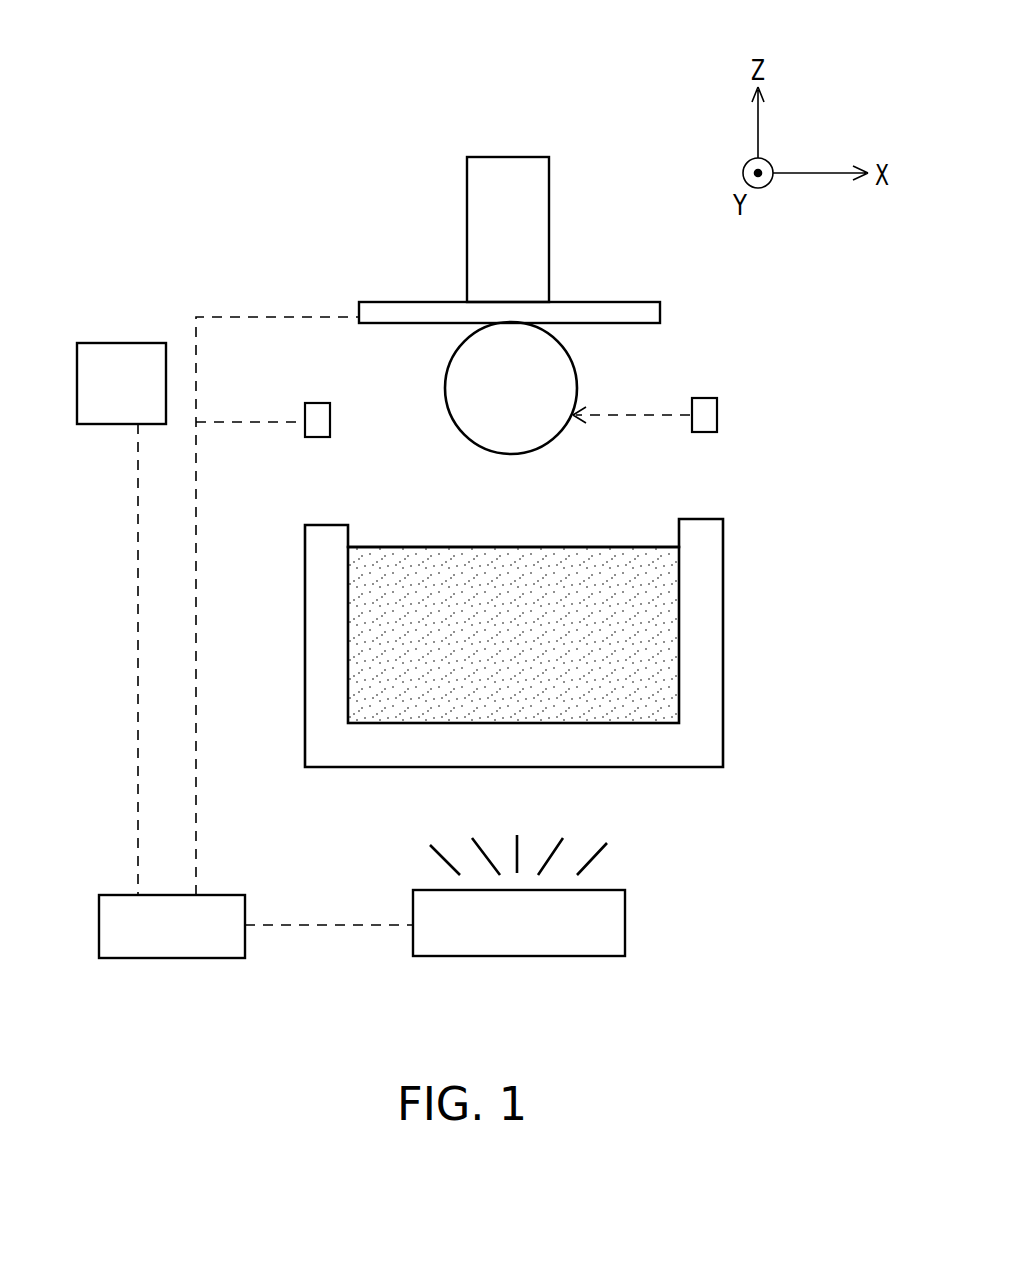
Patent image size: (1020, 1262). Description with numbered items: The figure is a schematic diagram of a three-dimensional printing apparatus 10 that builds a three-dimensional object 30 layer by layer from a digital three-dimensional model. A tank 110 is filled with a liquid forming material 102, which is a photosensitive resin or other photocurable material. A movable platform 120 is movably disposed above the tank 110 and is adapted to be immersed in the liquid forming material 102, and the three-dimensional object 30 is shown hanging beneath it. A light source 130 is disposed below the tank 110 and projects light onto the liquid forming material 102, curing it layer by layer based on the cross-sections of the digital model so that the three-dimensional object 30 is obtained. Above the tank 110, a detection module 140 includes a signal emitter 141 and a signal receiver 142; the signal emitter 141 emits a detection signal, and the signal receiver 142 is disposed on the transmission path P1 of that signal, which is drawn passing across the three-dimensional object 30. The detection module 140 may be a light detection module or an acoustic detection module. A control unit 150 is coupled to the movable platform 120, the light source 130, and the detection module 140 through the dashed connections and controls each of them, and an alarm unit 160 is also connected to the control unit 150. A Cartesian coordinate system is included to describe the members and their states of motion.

The three-dimensional printing apparatus 10 is at (785, 1027).
The three-dimensional object 30 is at (443, 391).
The liquid forming material 102 is at (650, 683).
The tank 110 is at (723, 625).
The movable platform 120 is at (537, 213).
The light source 130 is at (625, 925).
The detection module 140 is at (672, 74).
The signal emitter 141 is at (704, 398).
The signal receiver 142 is at (315, 403).
The control unit 150 is at (172, 960).
The alarm unit 160 is at (127, 343).
The transmission path P1 is at (642, 415).